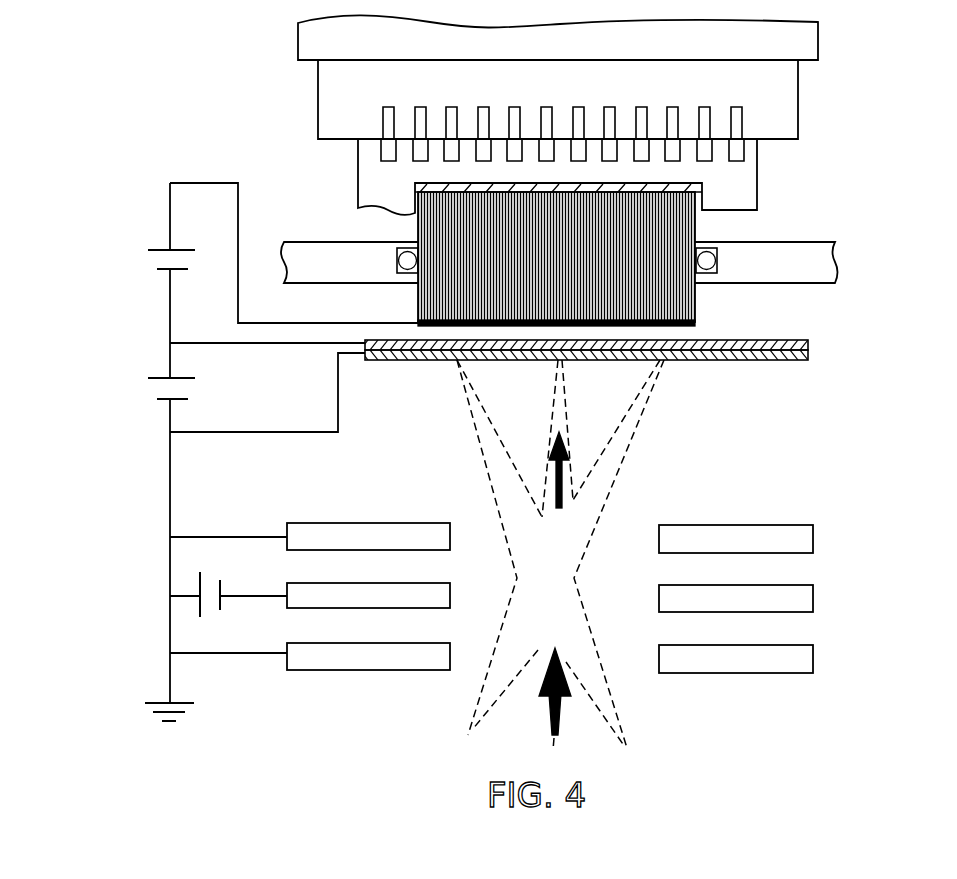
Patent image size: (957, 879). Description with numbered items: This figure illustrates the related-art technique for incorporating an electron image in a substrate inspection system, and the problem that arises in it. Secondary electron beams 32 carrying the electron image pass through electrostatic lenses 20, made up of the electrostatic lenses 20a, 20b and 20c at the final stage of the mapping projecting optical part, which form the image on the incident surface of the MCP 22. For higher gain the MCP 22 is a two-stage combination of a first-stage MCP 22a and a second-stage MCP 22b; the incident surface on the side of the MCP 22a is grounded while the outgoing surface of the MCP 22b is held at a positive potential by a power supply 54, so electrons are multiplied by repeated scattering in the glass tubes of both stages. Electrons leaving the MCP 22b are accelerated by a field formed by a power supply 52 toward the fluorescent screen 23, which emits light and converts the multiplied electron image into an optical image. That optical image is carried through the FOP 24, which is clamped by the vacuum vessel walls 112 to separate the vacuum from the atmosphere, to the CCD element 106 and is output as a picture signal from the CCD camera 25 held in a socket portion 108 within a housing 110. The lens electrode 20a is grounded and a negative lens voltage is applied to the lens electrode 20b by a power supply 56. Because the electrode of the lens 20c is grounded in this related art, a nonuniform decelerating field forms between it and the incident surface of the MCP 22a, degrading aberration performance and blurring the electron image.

The CCD camera 25 is at (810, 44).
The connector housing 110 is at (782, 90).
The socket portion 108 is at (738, 131).
The CCD element 106 is at (667, 185).
The FOP 24 is at (698, 230).
The fluorescent screen 23 is at (700, 326).
The vacuum vessel walls 112 is at (830, 267).
The MCP 22 is at (654, 356).
The first-stage MCP 22a is at (808, 357).
The second-stage MCP 22b is at (808, 346).
The secondary electron beams 32 is at (640, 425).
The electrostatic lenses 20 is at (619, 600).
The electrostatic lens 20a is at (590, 660).
The electrostatic lens 20b is at (815, 600).
The electrostatic lens 20c is at (815, 540).
The power supply 52 is at (155, 258).
The power supply 54 is at (155, 386).
The power supply 56 is at (207, 615).